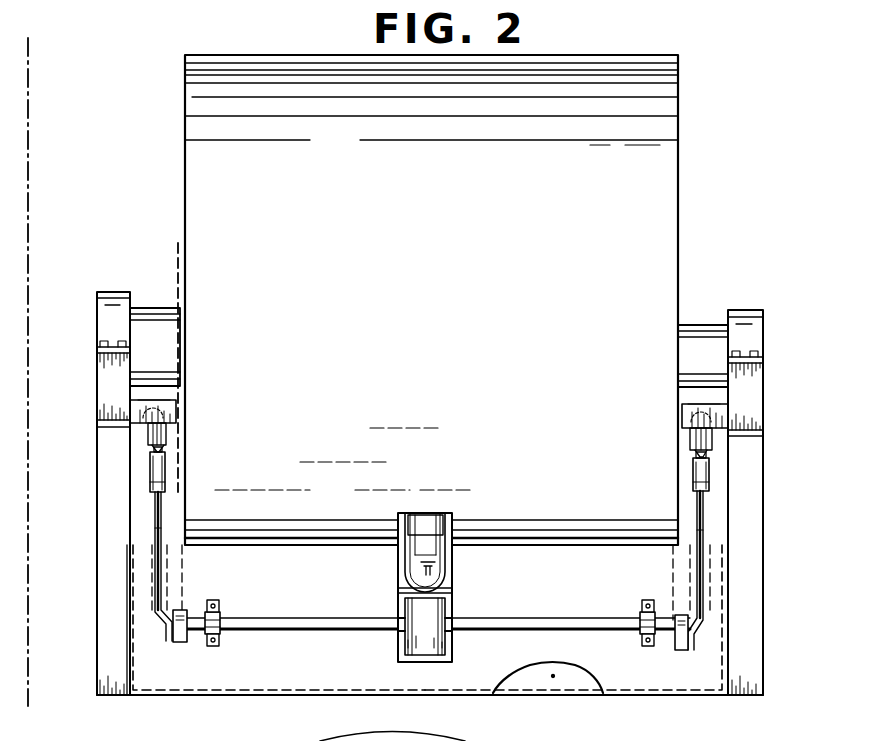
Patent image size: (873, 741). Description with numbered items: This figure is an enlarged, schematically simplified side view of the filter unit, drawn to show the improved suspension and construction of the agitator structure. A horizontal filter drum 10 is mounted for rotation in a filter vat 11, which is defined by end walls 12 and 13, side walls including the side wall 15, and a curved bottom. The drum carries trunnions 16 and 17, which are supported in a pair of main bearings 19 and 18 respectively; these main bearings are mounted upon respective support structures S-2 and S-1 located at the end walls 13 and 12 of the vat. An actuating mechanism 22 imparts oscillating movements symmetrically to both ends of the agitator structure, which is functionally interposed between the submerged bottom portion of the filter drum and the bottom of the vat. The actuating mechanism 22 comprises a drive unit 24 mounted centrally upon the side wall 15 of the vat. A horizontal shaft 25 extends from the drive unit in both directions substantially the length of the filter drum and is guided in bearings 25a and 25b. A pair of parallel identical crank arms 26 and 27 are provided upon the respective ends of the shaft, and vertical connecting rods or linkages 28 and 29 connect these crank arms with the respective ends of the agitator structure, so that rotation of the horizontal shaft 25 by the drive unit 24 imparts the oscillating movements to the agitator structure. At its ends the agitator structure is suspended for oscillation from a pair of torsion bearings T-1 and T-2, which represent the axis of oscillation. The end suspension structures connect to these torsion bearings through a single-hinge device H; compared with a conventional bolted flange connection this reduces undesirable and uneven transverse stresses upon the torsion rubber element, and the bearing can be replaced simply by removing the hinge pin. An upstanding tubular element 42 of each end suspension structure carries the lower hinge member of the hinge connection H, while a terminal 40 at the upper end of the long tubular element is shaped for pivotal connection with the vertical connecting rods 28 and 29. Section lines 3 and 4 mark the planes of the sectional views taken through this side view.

The section line 3- 3 is at (28, 38).
The section line 4- 4 is at (181, 253).
The horizontal filter drum 10 is at (714, 137).
The filter vat 11 is at (323, 543).
The end wall 12 is at (130, 602).
The end wall 13 is at (727, 630).
The side wall 15 is at (541, 600).
The trunnion 16 is at (713, 365).
The trunnion 17 is at (168, 357).
The main bearing 18 is at (113, 291).
The main bearing 19 is at (746, 305).
The actuating mechanism 22 is at (456, 612).
The drive unit 24 is at (398, 588).
The horizontal shaft 25 is at (313, 622).
The bearing 25a is at (219, 612).
The bearing 25b is at (643, 608).
The crank arm 26 is at (184, 641).
The crank arm 27 is at (681, 630).
The vertical connecting rod 28 is at (161, 530).
The vertical connecting rod 29 is at (698, 530).
The terminal 40 is at (150, 497).
The upstanding tubular element 42 is at (151, 523).
The single-hinge device H is at (164, 450).
The torsion bearing T-1 is at (176, 409).
The torsion bearing T-2 is at (689, 415).
The support structure S-1 is at (108, 490).
The support structure S-2 is at (750, 497).